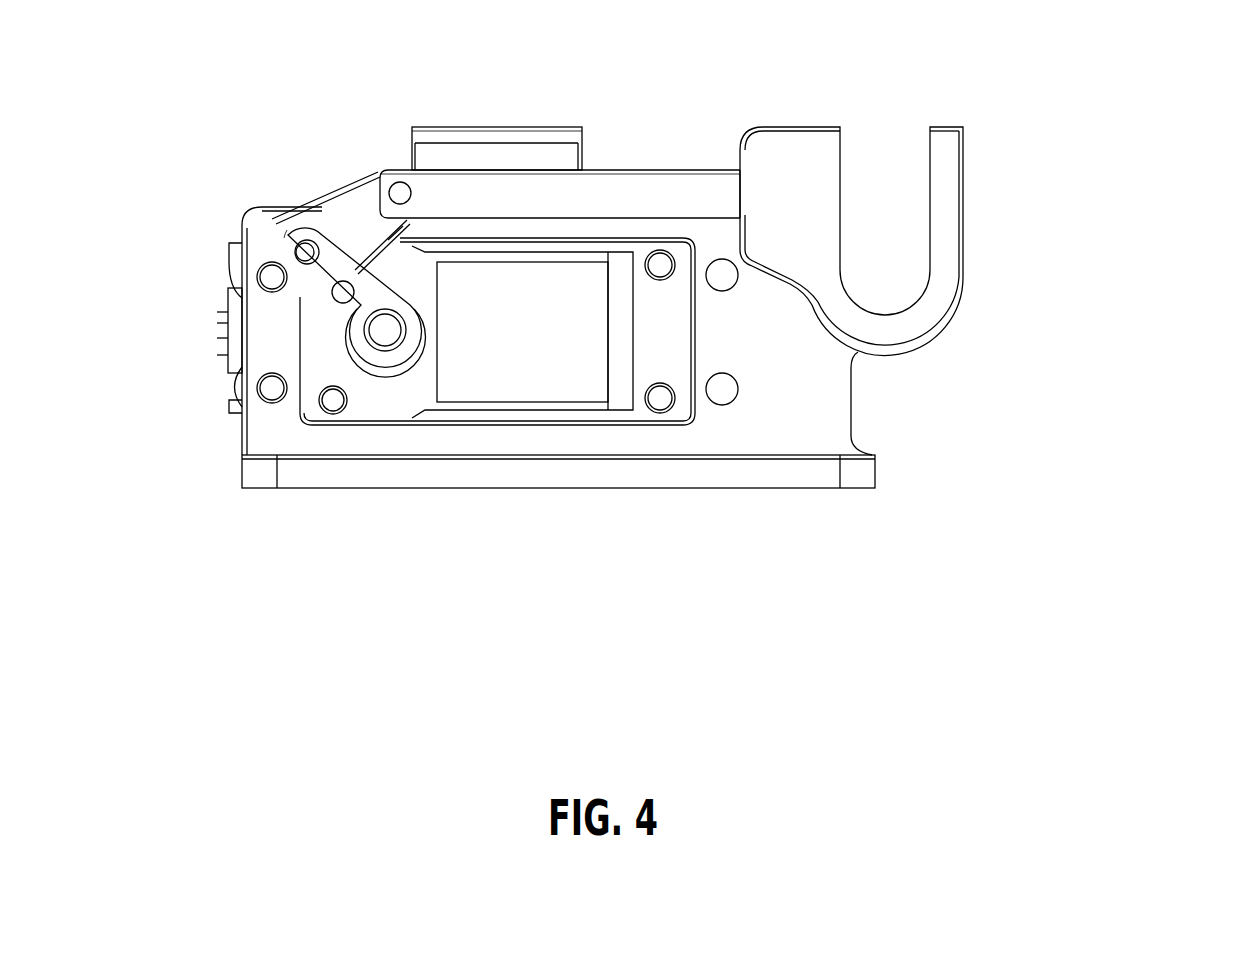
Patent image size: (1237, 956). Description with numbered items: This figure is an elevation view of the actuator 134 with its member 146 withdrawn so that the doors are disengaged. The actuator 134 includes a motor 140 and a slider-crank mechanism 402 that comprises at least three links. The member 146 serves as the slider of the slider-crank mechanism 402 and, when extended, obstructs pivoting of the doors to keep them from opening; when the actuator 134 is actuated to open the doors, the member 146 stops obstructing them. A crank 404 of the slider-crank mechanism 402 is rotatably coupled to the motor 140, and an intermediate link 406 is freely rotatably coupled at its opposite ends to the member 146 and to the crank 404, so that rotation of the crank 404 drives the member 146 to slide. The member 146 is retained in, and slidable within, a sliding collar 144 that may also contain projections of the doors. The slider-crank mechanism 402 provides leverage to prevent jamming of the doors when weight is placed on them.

The actuator 134 is at (1160, 171).
The motor 140 is at (302, 408).
The sliding collar 144 is at (965, 273).
The member 146 is at (703, 168).
The slider-crank mechanism 402 is at (395, 99).
The crank 404 is at (320, 300).
The intermediate link 406 is at (293, 218).